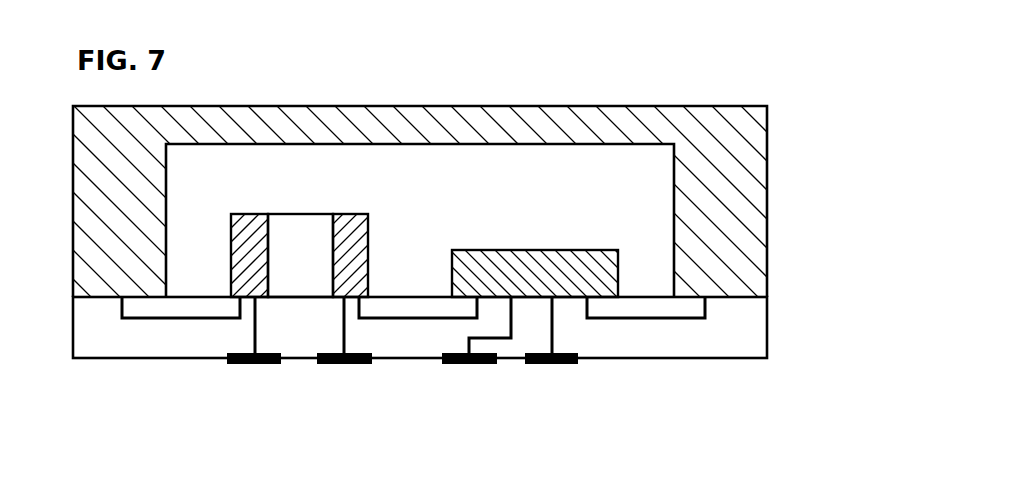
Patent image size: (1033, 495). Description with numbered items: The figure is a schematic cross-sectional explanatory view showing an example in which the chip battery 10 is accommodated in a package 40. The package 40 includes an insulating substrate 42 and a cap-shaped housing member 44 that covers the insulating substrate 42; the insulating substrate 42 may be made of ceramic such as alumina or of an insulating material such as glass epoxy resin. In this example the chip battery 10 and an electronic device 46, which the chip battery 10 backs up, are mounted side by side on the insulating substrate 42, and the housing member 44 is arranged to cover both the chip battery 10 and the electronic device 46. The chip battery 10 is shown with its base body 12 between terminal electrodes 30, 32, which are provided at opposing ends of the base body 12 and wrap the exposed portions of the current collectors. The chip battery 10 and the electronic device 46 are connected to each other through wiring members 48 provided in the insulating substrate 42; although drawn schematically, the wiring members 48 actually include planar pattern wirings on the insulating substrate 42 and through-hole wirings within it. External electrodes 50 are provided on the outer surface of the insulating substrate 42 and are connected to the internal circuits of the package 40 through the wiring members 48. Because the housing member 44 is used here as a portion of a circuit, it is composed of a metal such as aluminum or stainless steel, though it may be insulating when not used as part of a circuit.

The package 40 is at (770, 103).
The housing member 44 is at (753, 203).
The insulating substrate 42 is at (753, 322).
The chip battery 10 is at (358, 204).
The terminal electrode 30 is at (231, 250).
The base body 12 is at (298, 222).
The terminal electrode 32 is at (362, 248).
The electronic device 46 is at (536, 247).
The wiring members 48 is at (209, 318).
The external electrodes 50 is at (345, 366).